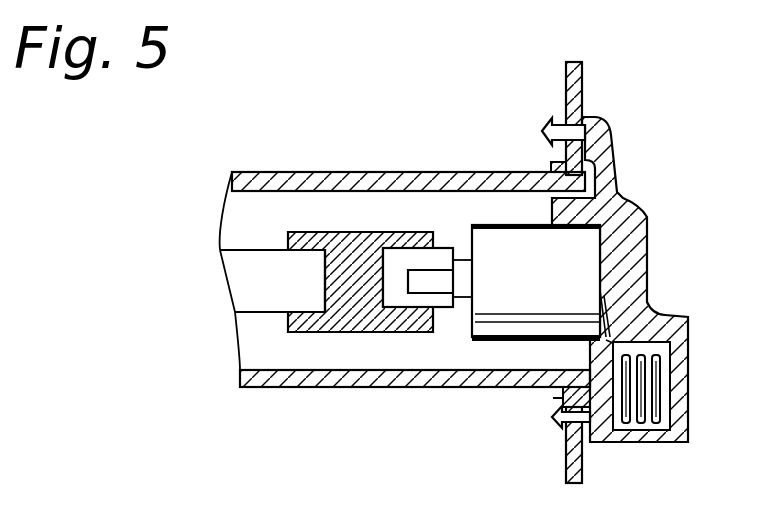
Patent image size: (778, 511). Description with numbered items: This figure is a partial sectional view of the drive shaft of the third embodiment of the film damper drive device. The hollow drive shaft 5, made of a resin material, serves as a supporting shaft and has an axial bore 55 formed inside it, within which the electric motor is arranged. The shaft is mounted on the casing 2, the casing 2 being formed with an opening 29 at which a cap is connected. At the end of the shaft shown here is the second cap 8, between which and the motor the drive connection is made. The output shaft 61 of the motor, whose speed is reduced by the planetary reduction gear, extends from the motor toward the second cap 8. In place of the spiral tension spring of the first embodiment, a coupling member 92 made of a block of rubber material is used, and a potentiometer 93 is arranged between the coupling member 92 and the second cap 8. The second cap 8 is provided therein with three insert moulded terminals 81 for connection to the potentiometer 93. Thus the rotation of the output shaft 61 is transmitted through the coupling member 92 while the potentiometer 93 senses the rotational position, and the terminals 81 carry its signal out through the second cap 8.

The casing 2 is at (582, 77).
The drive shaft 5 is at (338, 172).
The axial bore 55 is at (291, 196).
The second cap 8 is at (637, 268).
The opening 29 is at (527, 272).
The output shaft 61 is at (268, 302).
The insert moulded terminals 81 is at (658, 422).
The coupling member 92 is at (358, 236).
The potentiometer 93 is at (580, 245).